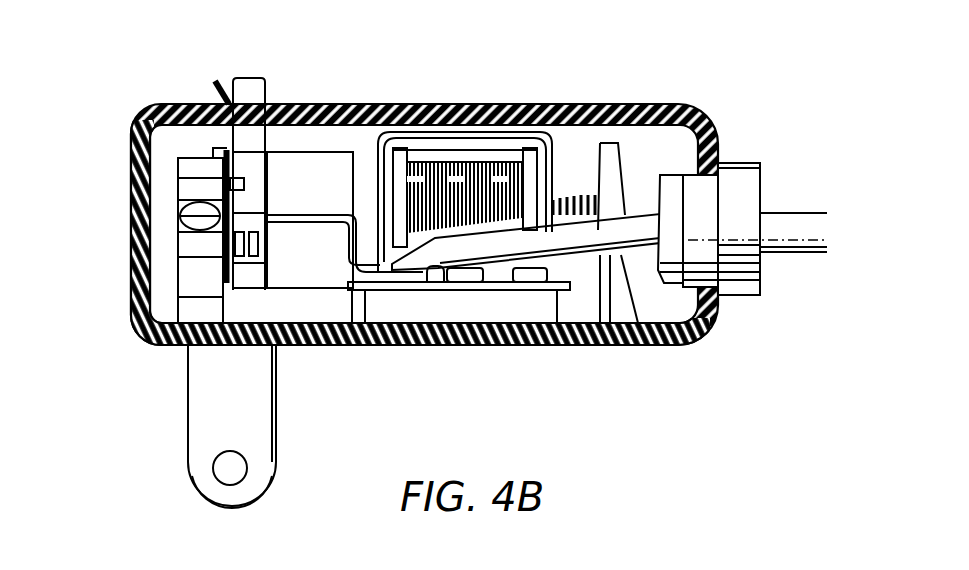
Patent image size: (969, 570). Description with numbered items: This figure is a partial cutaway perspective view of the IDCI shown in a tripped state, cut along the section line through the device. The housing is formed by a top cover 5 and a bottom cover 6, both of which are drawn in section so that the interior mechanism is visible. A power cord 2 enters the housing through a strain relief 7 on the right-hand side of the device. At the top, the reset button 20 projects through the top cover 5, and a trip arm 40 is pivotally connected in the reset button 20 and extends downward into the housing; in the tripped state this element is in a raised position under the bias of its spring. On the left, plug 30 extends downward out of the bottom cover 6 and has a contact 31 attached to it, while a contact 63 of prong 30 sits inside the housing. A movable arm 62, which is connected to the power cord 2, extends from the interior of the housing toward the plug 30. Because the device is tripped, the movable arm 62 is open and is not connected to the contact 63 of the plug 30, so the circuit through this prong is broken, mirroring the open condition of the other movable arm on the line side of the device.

The power cord 2 is at (797, 215).
The top cover 5 is at (652, 112).
The bottom cover 6 is at (662, 344).
The strain relief 7 is at (742, 185).
The reset button 20 is at (214, 80).
The plug 30 is at (207, 382).
The contact 31 is at (205, 256).
The trip arm 40 is at (267, 78).
The movable arm 62 is at (305, 213).
The contact 63 is at (180, 193).